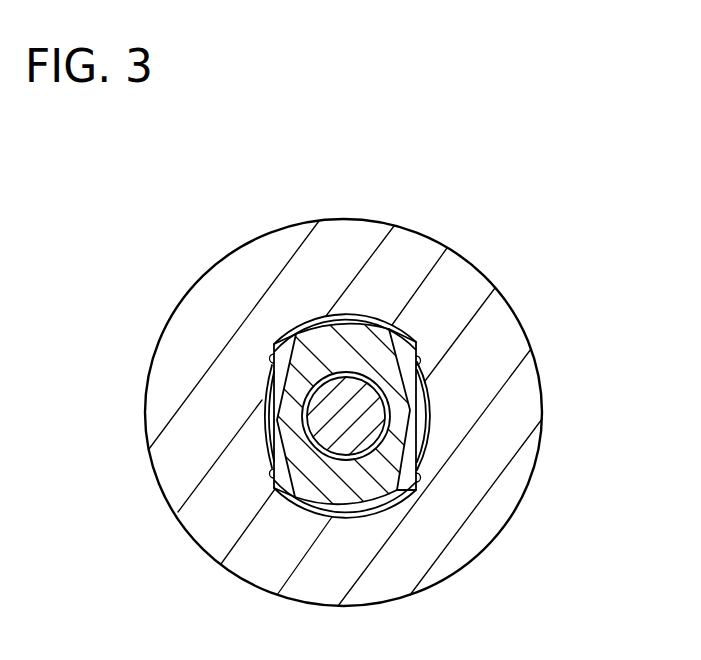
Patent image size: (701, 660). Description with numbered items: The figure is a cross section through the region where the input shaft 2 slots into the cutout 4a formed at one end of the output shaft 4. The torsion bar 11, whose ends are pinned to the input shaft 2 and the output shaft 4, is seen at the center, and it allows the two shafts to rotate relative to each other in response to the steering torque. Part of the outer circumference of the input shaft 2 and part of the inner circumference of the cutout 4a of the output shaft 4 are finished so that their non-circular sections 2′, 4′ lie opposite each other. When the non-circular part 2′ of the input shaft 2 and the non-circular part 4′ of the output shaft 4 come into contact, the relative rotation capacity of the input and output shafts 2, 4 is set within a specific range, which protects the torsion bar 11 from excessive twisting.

The input shaft 2 is at (388, 360).
The non-circular part of the input shaft 2′ is at (279, 345).
The output shaft 4 is at (418, 252).
The non-circular part of the output shaft 4′ is at (268, 372).
The cutout 4a is at (408, 428).
The torsion bar 11 is at (360, 414).